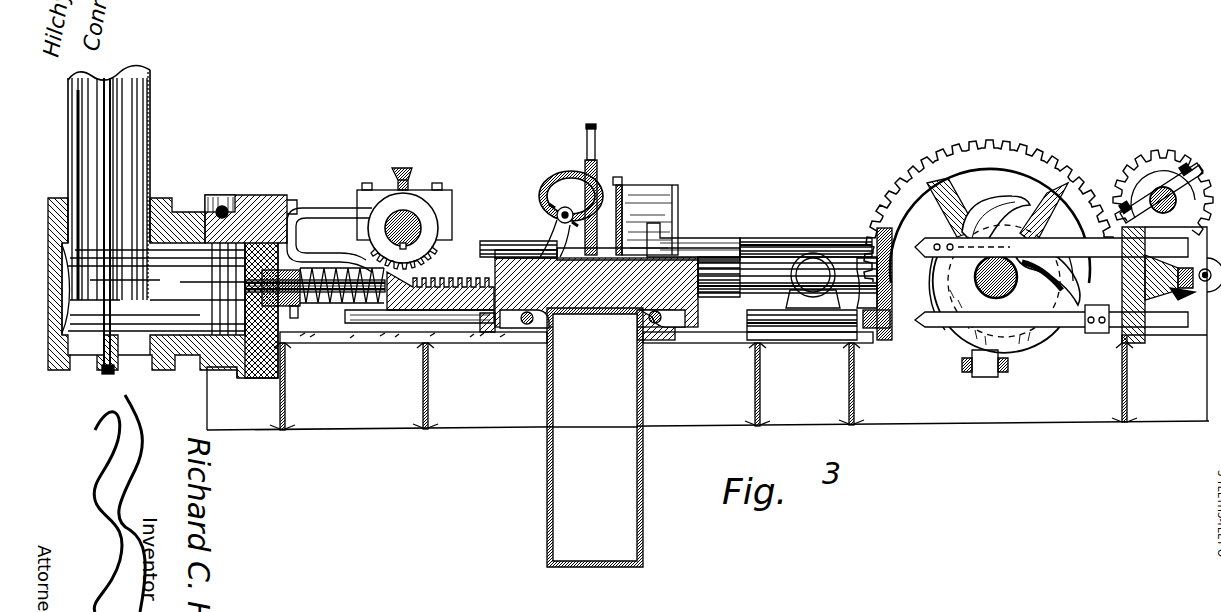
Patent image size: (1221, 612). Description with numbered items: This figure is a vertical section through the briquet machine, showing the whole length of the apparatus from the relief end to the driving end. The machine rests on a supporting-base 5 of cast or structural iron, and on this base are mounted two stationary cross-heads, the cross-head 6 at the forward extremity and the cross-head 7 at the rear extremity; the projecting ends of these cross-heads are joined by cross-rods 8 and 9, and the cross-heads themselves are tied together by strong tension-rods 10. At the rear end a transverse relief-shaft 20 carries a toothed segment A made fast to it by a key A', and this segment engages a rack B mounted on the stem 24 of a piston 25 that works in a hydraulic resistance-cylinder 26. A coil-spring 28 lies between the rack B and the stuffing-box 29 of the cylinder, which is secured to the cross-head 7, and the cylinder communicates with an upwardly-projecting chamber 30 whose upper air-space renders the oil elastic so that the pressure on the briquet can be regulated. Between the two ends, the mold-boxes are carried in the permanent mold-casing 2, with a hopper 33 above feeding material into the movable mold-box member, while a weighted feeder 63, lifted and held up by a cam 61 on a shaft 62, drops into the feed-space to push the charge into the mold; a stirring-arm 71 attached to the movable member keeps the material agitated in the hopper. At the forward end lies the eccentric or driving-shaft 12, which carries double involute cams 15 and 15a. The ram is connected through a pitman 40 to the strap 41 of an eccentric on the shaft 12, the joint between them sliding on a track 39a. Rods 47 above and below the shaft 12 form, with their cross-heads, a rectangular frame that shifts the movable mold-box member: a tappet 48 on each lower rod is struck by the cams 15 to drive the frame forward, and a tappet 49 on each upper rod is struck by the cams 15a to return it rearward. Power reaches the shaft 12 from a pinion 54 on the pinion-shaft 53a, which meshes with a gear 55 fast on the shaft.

The permanent mold-casing 2 is at (680, 300).
The supporting-base 5 is at (708, 392).
The cross-head 6 is at (1158, 300).
The cross-head 7 is at (255, 195).
The cross-rod 8 is at (1203, 282).
The cross-rod 9 is at (222, 205).
The tension-rods 10 is at (795, 237).
The eccentric-shaft 12 is at (1000, 300).
The involute cam 15 is at (1070, 290).
The involute cam 15a is at (1010, 210).
The relief-shaft 20 is at (408, 220).
The stem 24 is at (330, 310).
The piston 25 is at (200, 350).
The hydraulic resistance-cylinder 26 is at (70, 380).
The coil-spring 28 is at (335, 305).
The stuffing-box 29 is at (284, 299).
The chamber 30 is at (123, 182).
The hopper 33 is at (665, 185).
The track 39a is at (820, 258).
The pitman 40 is at (930, 280).
The strap 41 is at (1030, 343).
The rods 47 is at (1072, 238).
The tappet 48 is at (1096, 333).
The tappet 49 is at (950, 200).
The pinion-shaft 53a is at (1150, 195).
The pinion 54 is at (1160, 180).
The gear 55 is at (1000, 160).
The cam 61 is at (560, 185).
The shaft 62 is at (556, 213).
The feeder 63 is at (606, 187).
The agitating or stirring-arm 71 is at (700, 237).
The toothed segment A is at (387, 239).
The key A' is at (457, 208).
The rack B is at (468, 275).